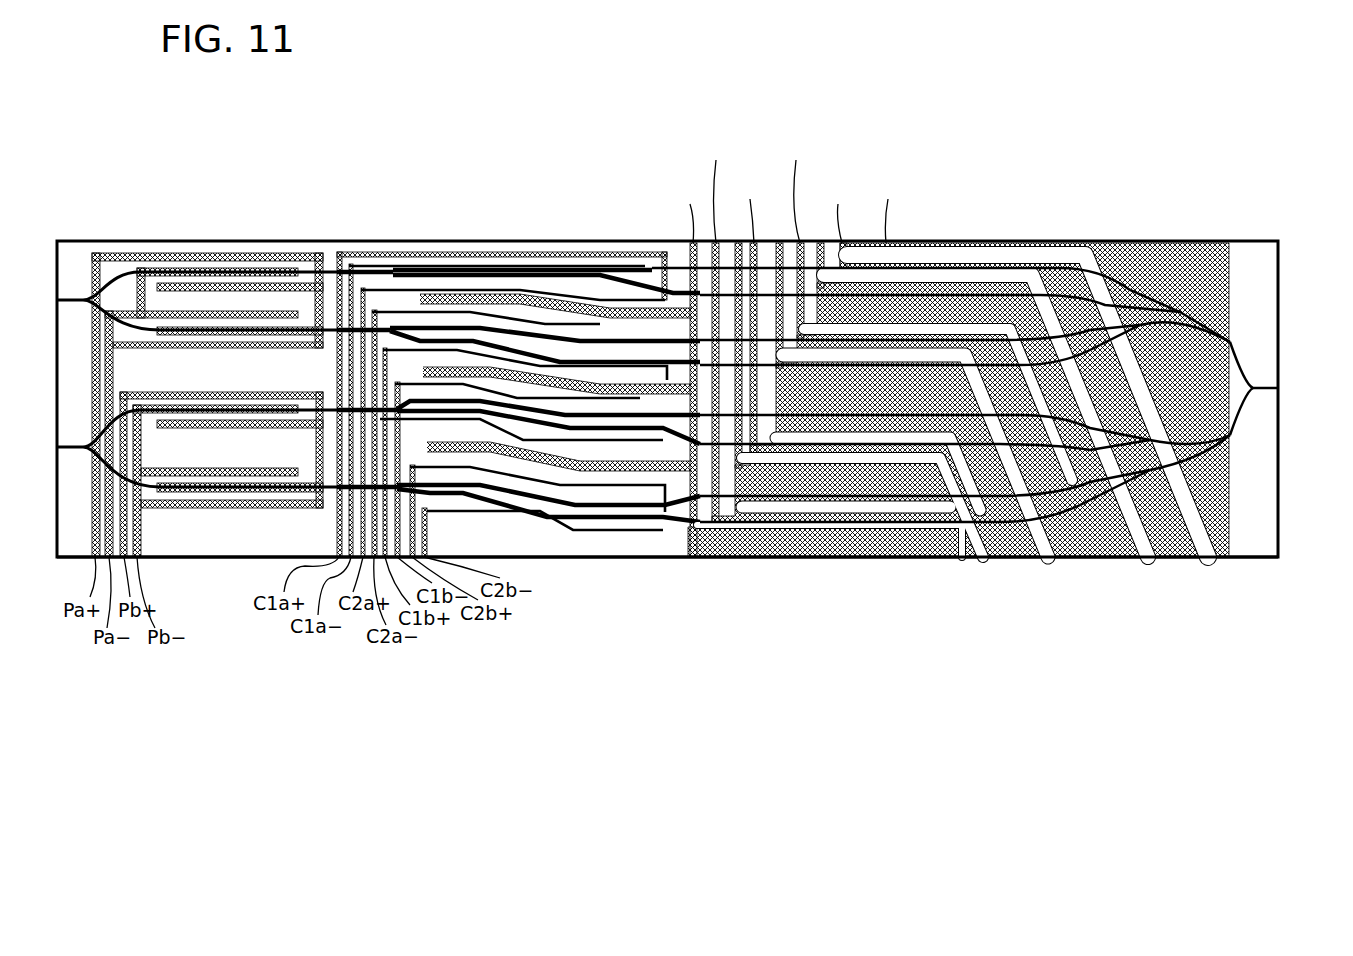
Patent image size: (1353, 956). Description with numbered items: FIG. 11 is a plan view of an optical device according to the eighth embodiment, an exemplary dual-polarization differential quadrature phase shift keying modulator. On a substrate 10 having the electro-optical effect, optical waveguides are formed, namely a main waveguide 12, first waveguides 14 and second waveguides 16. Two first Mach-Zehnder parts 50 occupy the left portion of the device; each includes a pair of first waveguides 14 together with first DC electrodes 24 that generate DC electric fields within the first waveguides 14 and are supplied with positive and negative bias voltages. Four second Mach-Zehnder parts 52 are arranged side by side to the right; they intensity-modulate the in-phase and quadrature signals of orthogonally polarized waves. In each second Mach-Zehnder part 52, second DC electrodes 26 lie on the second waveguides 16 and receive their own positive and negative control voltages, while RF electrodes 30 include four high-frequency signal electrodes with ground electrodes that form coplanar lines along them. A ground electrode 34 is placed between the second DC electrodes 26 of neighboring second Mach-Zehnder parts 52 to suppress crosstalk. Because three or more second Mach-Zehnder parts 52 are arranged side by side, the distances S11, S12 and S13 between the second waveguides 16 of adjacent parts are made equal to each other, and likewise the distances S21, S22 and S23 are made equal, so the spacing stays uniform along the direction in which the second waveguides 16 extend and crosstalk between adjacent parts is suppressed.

The substrate 10 is at (1279, 512).
The main waveguide 12 is at (1200, 325).
The first waveguides 14 is at (208, 268).
The second waveguides 16 is at (462, 268).
The first DC electrodes 24 is at (148, 253).
The second DC electrodes 26 is at (395, 252).
The RF electrodes 30 is at (667, 309).
The ground electrode 34 is at (581, 294).
The first Mach-Zehnder part 50 is at (93, 670).
The second Mach-Zehnder parts 52 is at (1245, 670).
The distance S11 is at (423, 277).
The distance S12 is at (423, 341).
The distance S13 is at (423, 405).
The distance S21 is at (580, 277).
The distance S22 is at (580, 365).
The distance S23 is at (580, 433).